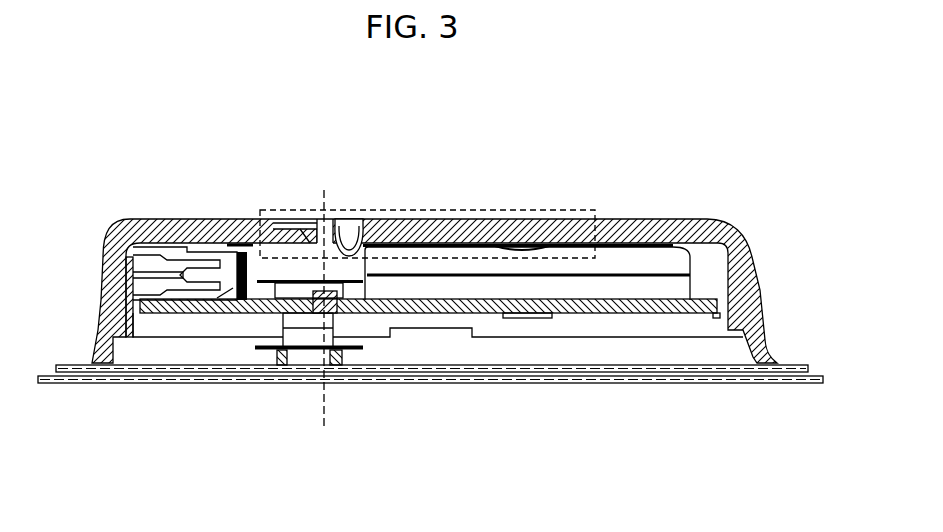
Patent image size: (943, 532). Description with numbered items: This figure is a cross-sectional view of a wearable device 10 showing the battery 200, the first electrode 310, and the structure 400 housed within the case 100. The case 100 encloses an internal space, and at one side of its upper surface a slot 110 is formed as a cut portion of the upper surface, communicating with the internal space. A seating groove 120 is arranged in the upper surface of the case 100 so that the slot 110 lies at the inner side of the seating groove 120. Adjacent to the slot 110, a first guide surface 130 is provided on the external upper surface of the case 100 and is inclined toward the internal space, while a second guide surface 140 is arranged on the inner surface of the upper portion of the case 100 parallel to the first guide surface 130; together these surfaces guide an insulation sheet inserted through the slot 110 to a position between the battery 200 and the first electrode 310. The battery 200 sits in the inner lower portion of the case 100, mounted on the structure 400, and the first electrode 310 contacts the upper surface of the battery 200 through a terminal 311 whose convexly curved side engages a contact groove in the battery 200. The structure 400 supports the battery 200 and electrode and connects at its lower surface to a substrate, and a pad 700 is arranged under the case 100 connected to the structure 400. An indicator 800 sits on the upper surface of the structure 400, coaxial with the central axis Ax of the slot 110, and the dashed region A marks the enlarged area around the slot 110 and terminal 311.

The wearable device 10 is at (118, 157).
The case 100 is at (724, 216).
The slot 110 is at (330, 227).
The seating groove 120 is at (282, 228).
The first guide surface 130 is at (310, 228).
The second guide surface 140 is at (363, 258).
The battery 200 is at (704, 268).
The first electrode 310 is at (467, 240).
The terminal 311 is at (537, 244).
The structure 400 is at (217, 305).
The pad 700 is at (787, 388).
The indicator 800 is at (322, 296).
The enlarged region A is at (585, 210).
The central axis Ax is at (327, 325).